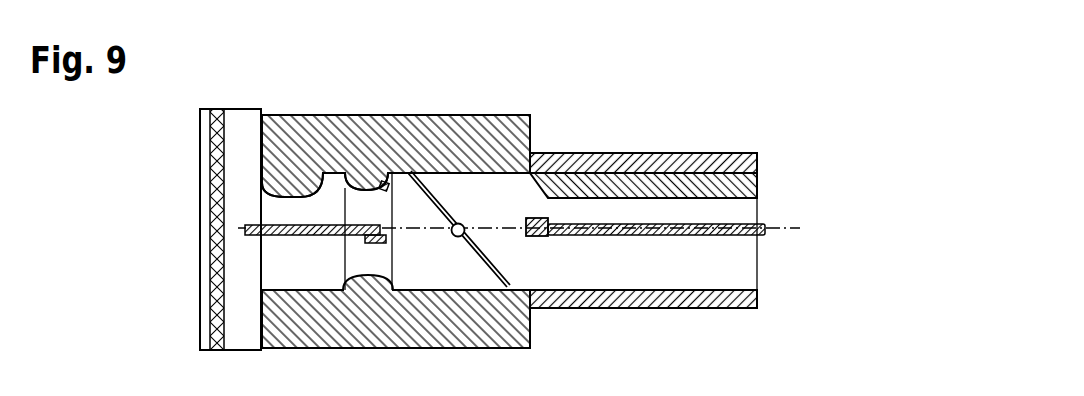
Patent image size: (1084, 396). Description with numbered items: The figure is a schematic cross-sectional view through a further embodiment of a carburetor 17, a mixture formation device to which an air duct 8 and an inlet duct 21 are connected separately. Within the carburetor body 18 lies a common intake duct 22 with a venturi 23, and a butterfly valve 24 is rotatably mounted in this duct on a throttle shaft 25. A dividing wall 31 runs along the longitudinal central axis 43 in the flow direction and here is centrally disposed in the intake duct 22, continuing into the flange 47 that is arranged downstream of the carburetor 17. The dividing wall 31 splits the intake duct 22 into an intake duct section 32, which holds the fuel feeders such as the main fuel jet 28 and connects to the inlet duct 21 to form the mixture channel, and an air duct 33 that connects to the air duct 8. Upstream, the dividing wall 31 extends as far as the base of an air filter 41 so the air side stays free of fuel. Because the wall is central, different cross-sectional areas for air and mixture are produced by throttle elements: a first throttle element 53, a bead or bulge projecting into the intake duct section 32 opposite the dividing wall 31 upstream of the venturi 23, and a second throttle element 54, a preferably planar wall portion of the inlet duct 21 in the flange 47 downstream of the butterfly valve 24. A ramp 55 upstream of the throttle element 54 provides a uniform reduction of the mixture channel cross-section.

The air duct 8 is at (645, 242).
The carburetor 17 is at (452, 100).
The carburetor body 18 is at (507, 127).
The inlet duct 21 is at (703, 205).
The intake duct 22 is at (268, 209).
The venturi 23 is at (368, 186).
The butterfly valve 24 is at (483, 273).
The throttle shaft 25 is at (456, 236).
The main fuel jet 28 is at (386, 184).
The dividing wall 31 is at (306, 236).
The intake duct section 32 is at (461, 201).
The air duct 33 is at (461, 259).
The air filter 41 is at (192, 293).
The longitudinal central axis 43 is at (786, 228).
The flange 47 is at (603, 308).
The first throttle element 53 is at (288, 192).
The throttle element 54 is at (652, 172).
The ramp 55 is at (538, 172).